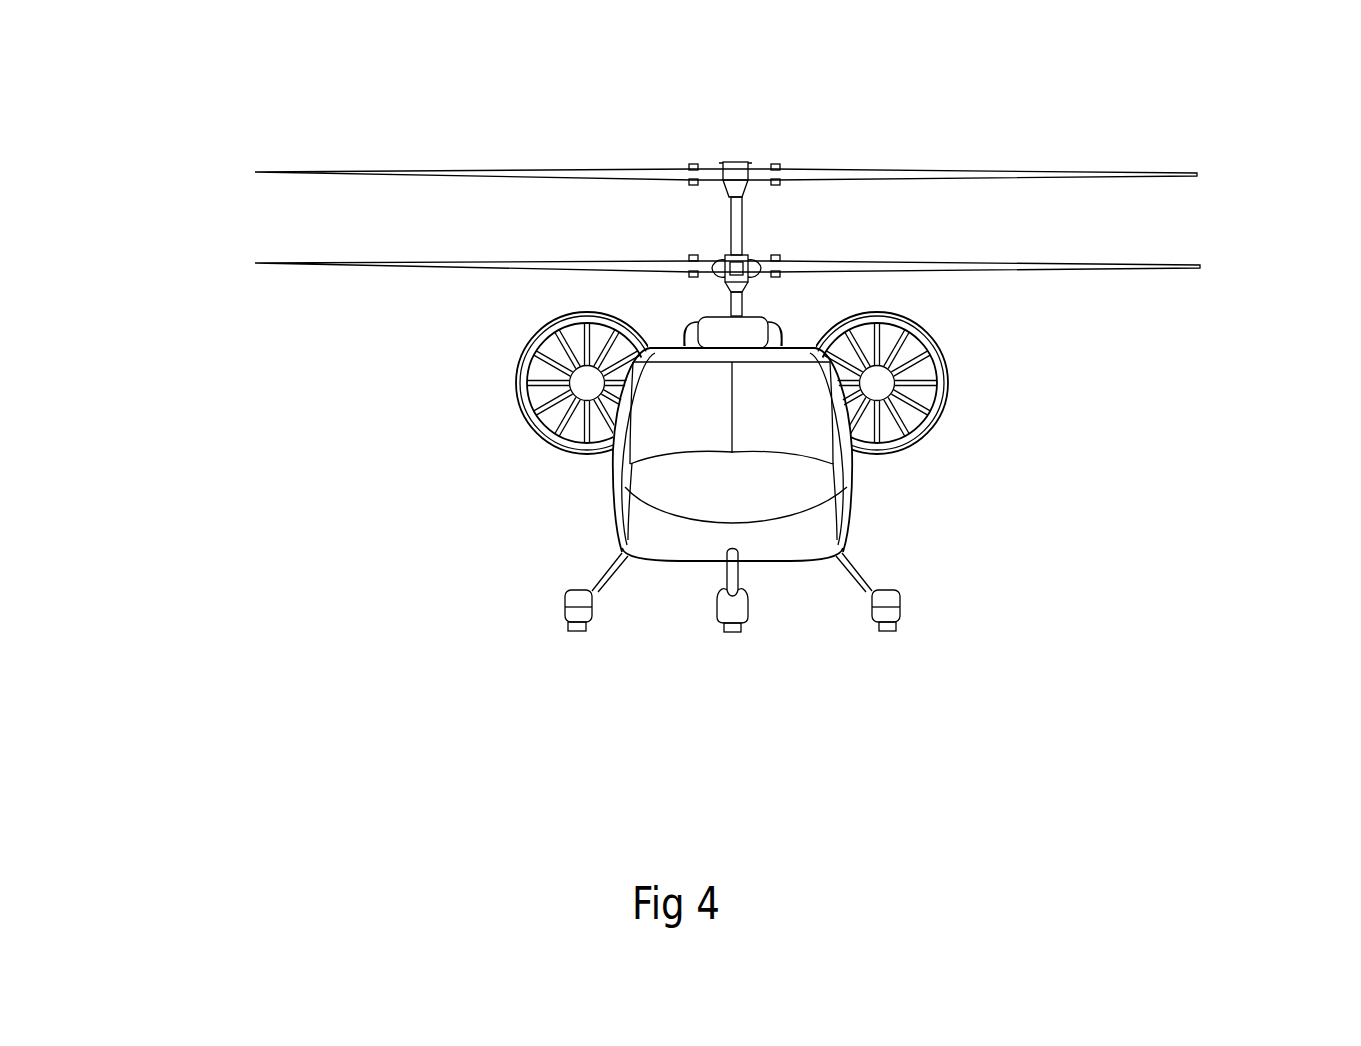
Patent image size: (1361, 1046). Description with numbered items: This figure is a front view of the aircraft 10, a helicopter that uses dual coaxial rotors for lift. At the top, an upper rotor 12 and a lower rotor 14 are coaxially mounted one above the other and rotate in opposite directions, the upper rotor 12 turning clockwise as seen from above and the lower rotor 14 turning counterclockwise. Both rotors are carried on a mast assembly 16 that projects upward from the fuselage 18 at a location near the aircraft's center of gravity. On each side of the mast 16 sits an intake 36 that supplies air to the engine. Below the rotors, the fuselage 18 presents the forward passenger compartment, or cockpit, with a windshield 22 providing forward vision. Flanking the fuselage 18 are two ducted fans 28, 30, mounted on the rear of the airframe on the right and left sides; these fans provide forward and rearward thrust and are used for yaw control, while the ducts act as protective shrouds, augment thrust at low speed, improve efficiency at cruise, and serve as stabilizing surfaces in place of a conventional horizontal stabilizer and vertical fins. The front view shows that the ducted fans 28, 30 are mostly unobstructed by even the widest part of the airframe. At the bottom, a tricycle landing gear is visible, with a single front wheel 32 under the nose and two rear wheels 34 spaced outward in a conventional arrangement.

The aircraft 10 is at (559, 37).
The upper rotor 12 is at (1258, 176).
The lower rotor 14 is at (1238, 273).
The mast assembly 16 is at (742, 240).
The fuselage 18 is at (666, 560).
The windshield 22 is at (790, 432).
The ducted fan 28 is at (946, 348).
The ducted fan 30 is at (523, 350).
The front wheel 32 is at (732, 632).
The rear wheels 34 is at (565, 622).
The intake 36 is at (694, 322).